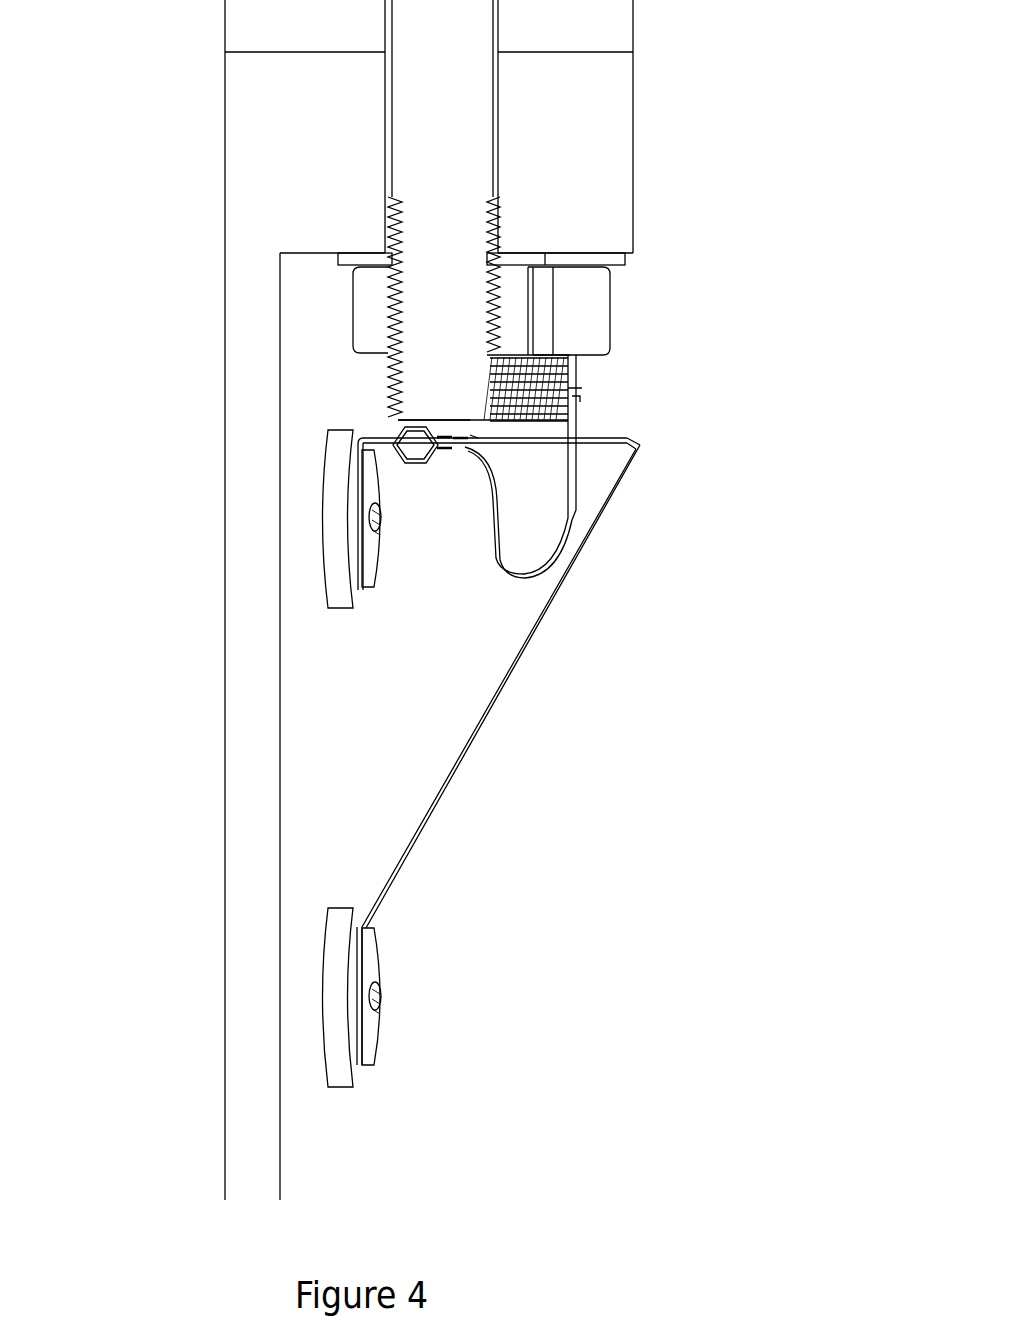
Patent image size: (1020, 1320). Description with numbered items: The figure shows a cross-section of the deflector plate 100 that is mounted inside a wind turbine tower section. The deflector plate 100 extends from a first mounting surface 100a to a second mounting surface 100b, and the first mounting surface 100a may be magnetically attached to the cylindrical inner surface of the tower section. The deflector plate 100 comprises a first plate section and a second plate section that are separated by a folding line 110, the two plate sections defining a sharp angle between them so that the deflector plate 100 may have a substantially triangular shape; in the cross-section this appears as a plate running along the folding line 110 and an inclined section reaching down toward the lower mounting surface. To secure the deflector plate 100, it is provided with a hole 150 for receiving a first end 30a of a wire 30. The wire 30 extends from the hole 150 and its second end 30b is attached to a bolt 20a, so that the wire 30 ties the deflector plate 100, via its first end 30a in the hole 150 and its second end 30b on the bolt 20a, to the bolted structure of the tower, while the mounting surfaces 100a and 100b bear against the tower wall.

The bolt 20a is at (570, 359).
The wire 30 is at (500, 577).
The first end of the wire 30a is at (465, 437).
The second end of the wire 30b is at (580, 405).
The deflector plate 100 is at (493, 697).
The first mounting surface 100a is at (318, 987).
The second mounting surface 100b is at (315, 522).
The folding line 110 is at (628, 442).
The hole 150 is at (393, 430).